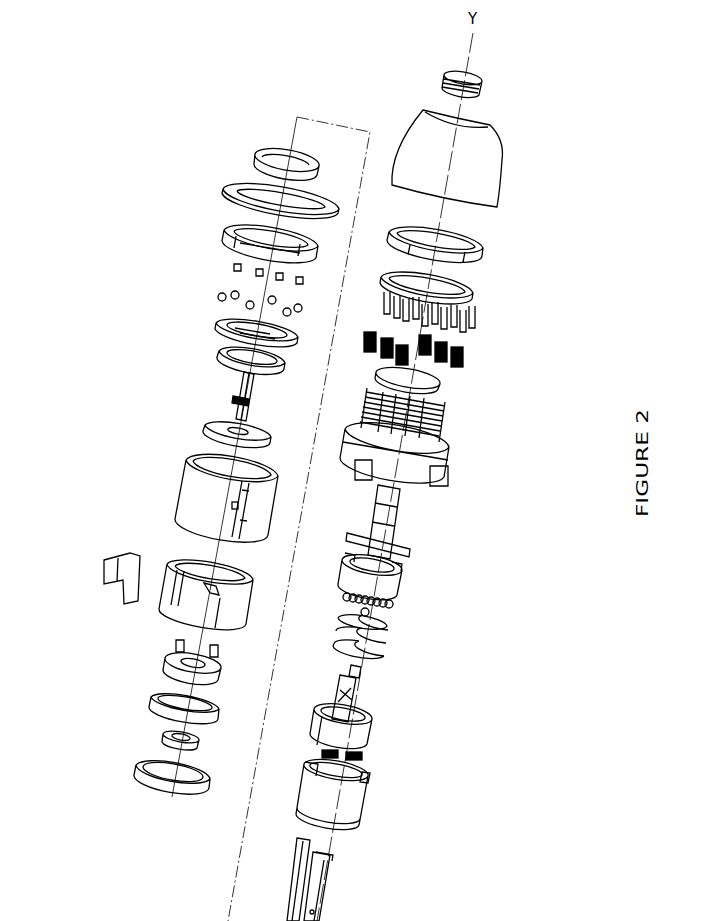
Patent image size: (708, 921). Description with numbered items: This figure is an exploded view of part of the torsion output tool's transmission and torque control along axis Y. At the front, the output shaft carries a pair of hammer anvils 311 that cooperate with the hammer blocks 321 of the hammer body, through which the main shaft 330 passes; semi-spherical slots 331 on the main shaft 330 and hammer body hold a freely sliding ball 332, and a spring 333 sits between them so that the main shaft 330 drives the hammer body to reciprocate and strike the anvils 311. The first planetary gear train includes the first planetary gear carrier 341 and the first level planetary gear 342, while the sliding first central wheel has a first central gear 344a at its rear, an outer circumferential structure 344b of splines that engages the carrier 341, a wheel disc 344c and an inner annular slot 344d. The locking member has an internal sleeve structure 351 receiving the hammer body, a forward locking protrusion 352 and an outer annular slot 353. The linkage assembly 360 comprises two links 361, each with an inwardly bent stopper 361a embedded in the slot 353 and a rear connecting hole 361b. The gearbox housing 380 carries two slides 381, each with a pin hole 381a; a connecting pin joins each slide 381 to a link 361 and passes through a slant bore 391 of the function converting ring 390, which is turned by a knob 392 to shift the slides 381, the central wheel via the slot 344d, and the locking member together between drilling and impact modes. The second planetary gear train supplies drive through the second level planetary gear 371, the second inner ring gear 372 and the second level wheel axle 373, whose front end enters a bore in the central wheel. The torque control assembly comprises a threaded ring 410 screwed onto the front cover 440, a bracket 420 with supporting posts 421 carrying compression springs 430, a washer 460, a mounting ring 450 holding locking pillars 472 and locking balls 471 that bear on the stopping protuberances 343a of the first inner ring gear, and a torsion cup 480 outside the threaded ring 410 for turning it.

The washer 460 is at (181, 185).
The mounting ring 450 is at (170, 226).
The locking pillar 472 is at (163, 246).
The locking ball 471 is at (162, 272).
The stopping protuberances 343a is at (156, 300).
The outer circumferential structure 344b is at (150, 362).
The first central gear 344a is at (134, 386).
The wheel disc 344c is at (132, 398).
The inner annular slot 344d is at (143, 420).
The gearbox housing 380 is at (150, 481).
The slide 381 is at (136, 492).
The pin hole 381a is at (126, 490).
The function converting ring 390 is at (138, 562).
The slant bore 391 is at (121, 557).
The knob 392 is at (81, 578).
The second level wheel axle 373 is at (120, 628).
The second level planetary gear 371 is at (122, 656).
The second inner ring gear 372 is at (121, 700).
The stopper 361a is at (162, 856).
The connecting hole 361b is at (159, 880).
The torsion cup 480 is at (487, 158).
The threaded ring 410 is at (484, 245).
The bracket 420 is at (481, 281).
The supporting posts 421 is at (483, 309).
The compression springs 430 is at (473, 340).
The front cover 440 is at (461, 426).
The hammer anvils 311 is at (464, 522).
The hammer blocks 321 is at (460, 560).
The ball 332 is at (462, 588).
The spring 333 is at (457, 633).
The semi-spherical slots 331 is at (465, 672).
The main shaft 330 is at (457, 698).
The first planetary gear carrier 341 is at (446, 726).
The first level planetary gear 342 is at (452, 742).
The sleeve structure 351 is at (443, 766).
The locking protrusion 352 is at (471, 791).
The outer annular slot 353 is at (439, 799).
The linkage assembly 360 is at (443, 886).
The link 361 is at (446, 890).